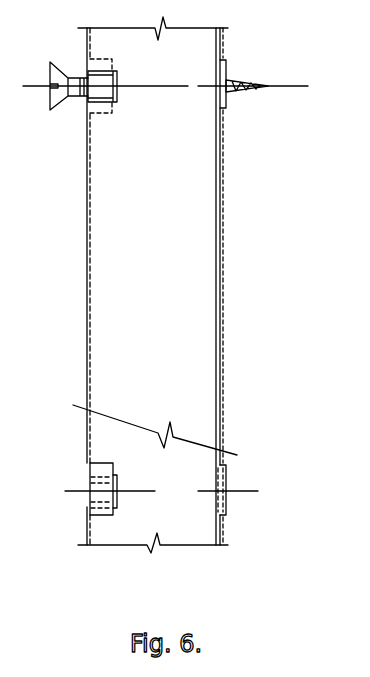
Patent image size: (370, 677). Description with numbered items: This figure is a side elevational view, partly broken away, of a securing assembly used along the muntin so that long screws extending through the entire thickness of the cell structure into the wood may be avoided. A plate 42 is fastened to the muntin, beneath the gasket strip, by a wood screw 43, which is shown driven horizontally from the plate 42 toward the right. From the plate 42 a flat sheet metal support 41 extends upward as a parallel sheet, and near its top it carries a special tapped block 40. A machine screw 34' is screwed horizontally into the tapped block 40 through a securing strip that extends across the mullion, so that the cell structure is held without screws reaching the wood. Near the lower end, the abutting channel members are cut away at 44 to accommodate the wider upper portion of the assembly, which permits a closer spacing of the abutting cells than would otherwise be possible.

The machine screw 34' is at (51, 83).
The tapped block 40 is at (88, 496).
The sheet metal support 41 is at (87, 287).
The plate 42 is at (222, 362).
The wood screw 43 is at (228, 79).
The cut-away portion of channel member 44 is at (118, 500).